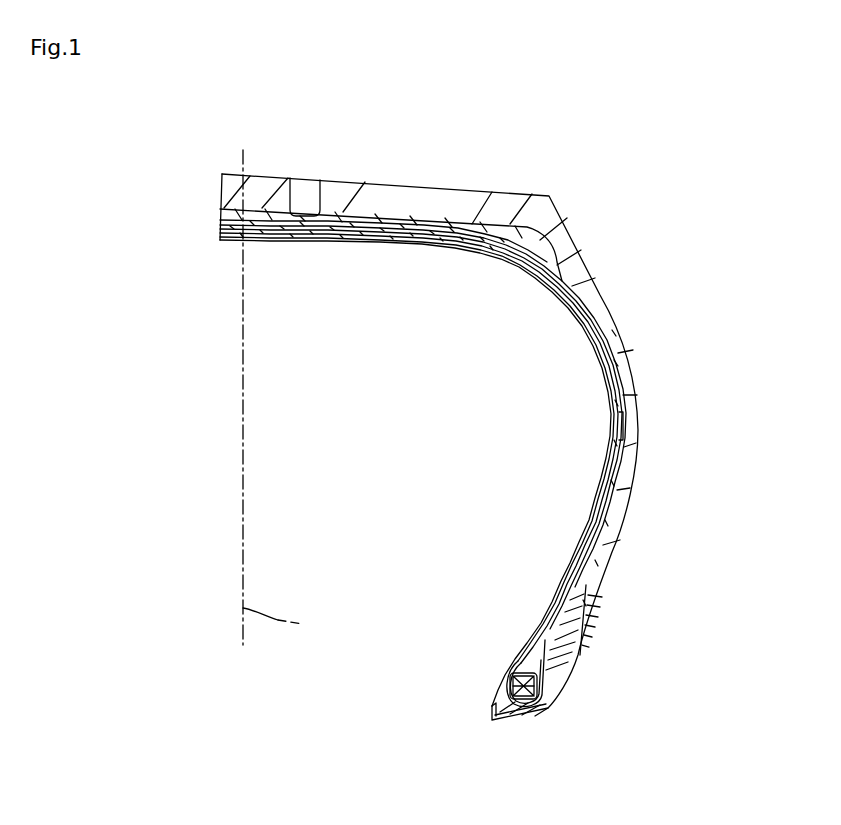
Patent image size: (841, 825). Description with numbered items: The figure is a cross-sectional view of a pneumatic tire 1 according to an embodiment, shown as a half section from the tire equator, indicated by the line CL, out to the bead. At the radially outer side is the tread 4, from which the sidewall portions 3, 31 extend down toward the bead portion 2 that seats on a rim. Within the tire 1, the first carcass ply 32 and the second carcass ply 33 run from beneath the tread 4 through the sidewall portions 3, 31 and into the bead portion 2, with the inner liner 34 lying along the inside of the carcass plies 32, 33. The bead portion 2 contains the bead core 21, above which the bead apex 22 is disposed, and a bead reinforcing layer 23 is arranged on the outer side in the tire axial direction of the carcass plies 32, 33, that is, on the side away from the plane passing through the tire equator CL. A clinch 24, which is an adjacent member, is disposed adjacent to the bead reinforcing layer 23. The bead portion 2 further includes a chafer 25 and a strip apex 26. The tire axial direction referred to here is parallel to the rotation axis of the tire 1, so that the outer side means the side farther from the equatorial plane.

The tire 1 is at (113, 156).
The bead portion 2 is at (675, 653).
The sidewall portion 3 is at (662, 400).
The tread 4 is at (511, 191).
The bead core 21 is at (538, 694).
The bead apex 22 is at (540, 672).
The bead reinforcing layer 23 is at (550, 640).
The clinch 24 is at (584, 611).
The chafer 25 is at (492, 712).
The strip apex 26 is at (518, 650).
The sidewall portion 31 is at (627, 330).
The first carcass ply 32 is at (627, 450).
The second carcass ply 33 is at (600, 510).
The inner liner 34 is at (606, 446).